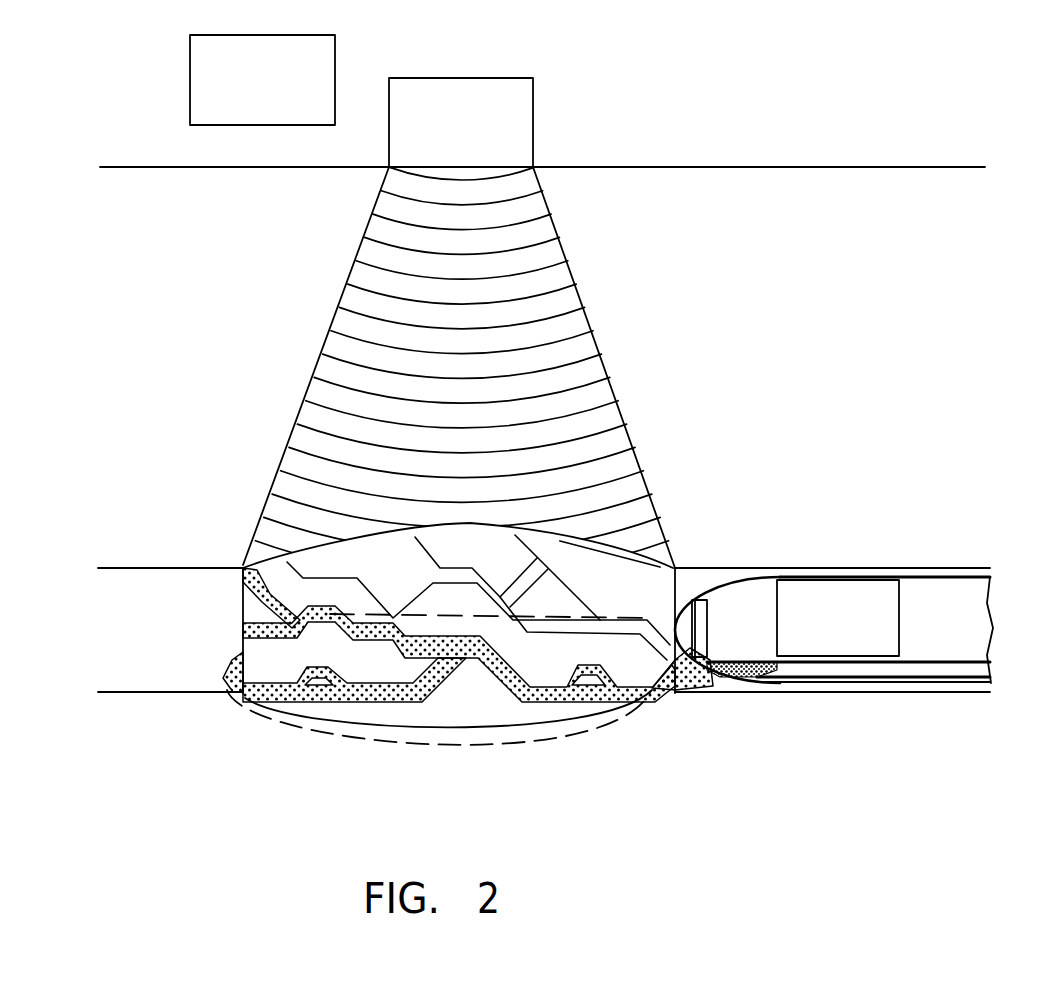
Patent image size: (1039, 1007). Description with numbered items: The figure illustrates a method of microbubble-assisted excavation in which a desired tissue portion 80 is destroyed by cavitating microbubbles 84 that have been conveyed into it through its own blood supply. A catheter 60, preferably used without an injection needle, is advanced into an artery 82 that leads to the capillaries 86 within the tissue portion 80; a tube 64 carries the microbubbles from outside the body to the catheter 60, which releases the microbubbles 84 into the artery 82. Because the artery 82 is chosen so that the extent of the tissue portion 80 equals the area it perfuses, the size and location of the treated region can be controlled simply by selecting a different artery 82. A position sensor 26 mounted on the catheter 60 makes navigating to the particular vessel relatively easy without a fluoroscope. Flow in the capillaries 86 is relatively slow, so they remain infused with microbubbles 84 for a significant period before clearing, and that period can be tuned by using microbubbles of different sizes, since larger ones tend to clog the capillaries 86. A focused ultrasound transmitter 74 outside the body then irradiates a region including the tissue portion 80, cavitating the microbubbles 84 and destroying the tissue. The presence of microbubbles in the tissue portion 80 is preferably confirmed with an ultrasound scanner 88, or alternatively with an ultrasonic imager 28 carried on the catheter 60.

The focused ultrasound transmitter 74 is at (262, 80).
The ultrasound scanner 88 is at (461, 122).
The position sensor 26 is at (838, 618).
The ultrasonic imager 28 is at (723, 590).
The artery 82 is at (843, 567).
The catheter 60 is at (938, 577).
The tube 64 is at (708, 662).
The microbubbles 84 is at (693, 667).
The capillaries 86 is at (397, 655).
The tissue portion 80 is at (449, 695).